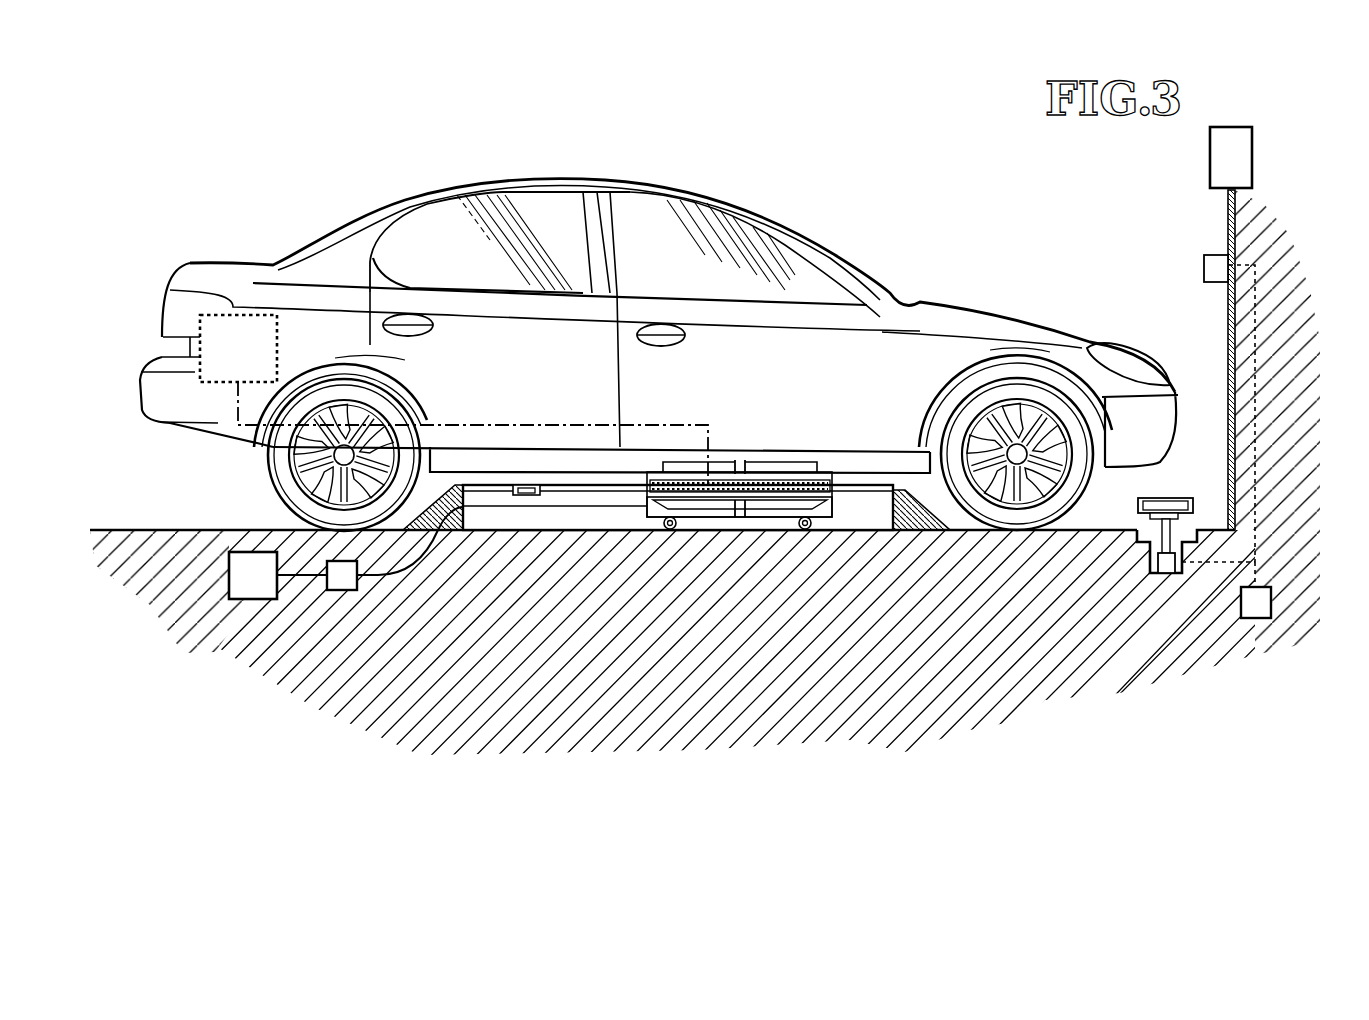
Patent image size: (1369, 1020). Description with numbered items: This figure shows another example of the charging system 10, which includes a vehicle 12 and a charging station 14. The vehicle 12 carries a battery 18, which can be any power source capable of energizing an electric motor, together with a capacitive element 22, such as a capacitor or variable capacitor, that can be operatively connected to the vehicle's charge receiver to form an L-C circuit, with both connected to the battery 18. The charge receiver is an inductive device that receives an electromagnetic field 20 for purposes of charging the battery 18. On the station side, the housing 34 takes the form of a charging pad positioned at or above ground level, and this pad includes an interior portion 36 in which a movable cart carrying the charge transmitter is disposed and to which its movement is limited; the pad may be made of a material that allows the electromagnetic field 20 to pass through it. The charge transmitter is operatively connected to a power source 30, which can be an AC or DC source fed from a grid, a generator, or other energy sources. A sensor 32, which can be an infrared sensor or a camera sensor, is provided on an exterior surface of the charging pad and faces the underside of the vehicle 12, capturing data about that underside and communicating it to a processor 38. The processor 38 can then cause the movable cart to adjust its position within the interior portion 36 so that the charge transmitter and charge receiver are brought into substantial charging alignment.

The charging system 10 is at (249, 120).
The vehicle 12 is at (532, 180).
The charging station 14 is at (744, 754).
The battery 18 is at (277, 343).
The electromagnetic field 20 is at (647, 483).
The capacitive element 22 is at (740, 466).
The power source 30 is at (253, 600).
The sensor 32 is at (527, 496).
The housing 34 is at (920, 505).
The interior portion 36 is at (856, 514).
The processor 38 is at (340, 592).